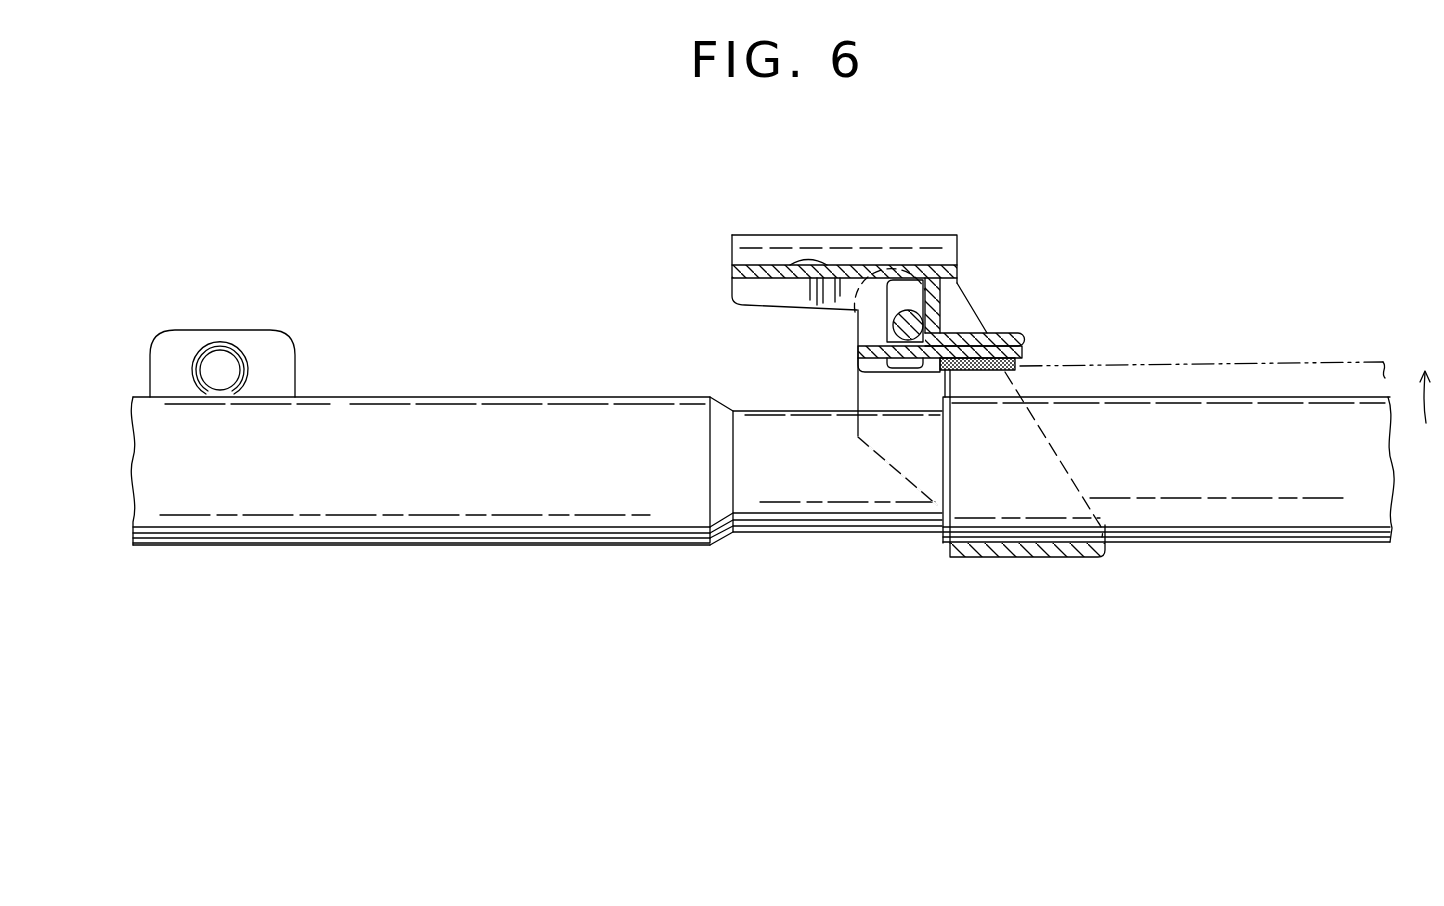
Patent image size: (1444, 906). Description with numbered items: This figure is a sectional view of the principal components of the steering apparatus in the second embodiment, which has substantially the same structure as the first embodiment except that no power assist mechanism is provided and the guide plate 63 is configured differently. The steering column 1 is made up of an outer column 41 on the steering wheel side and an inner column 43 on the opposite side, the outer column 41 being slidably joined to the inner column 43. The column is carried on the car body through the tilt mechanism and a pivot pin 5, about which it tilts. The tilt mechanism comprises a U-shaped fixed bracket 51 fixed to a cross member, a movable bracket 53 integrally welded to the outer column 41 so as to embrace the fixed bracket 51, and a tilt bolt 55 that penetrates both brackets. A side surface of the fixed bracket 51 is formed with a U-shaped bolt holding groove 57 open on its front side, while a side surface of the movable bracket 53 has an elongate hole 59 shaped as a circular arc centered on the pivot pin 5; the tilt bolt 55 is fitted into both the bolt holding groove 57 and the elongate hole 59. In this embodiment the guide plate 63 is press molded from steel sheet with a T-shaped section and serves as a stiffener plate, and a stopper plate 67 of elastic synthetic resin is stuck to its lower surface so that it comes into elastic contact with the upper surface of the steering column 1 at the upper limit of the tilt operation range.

The steering column 1 is at (1141, 352).
The pivot pin 5 is at (225, 367).
The outer column 41 is at (1277, 425).
The inner column 43 is at (606, 399).
The fixed bracket 51 is at (782, 250).
The movable bracket 53 is at (870, 394).
The tilt bolt 55 is at (908, 311).
The bolt holding groove 57 is at (868, 325).
The elongate hole 59 is at (935, 244).
The guide plate 63 is at (1000, 333).
The stopper plate 67 is at (1018, 362).